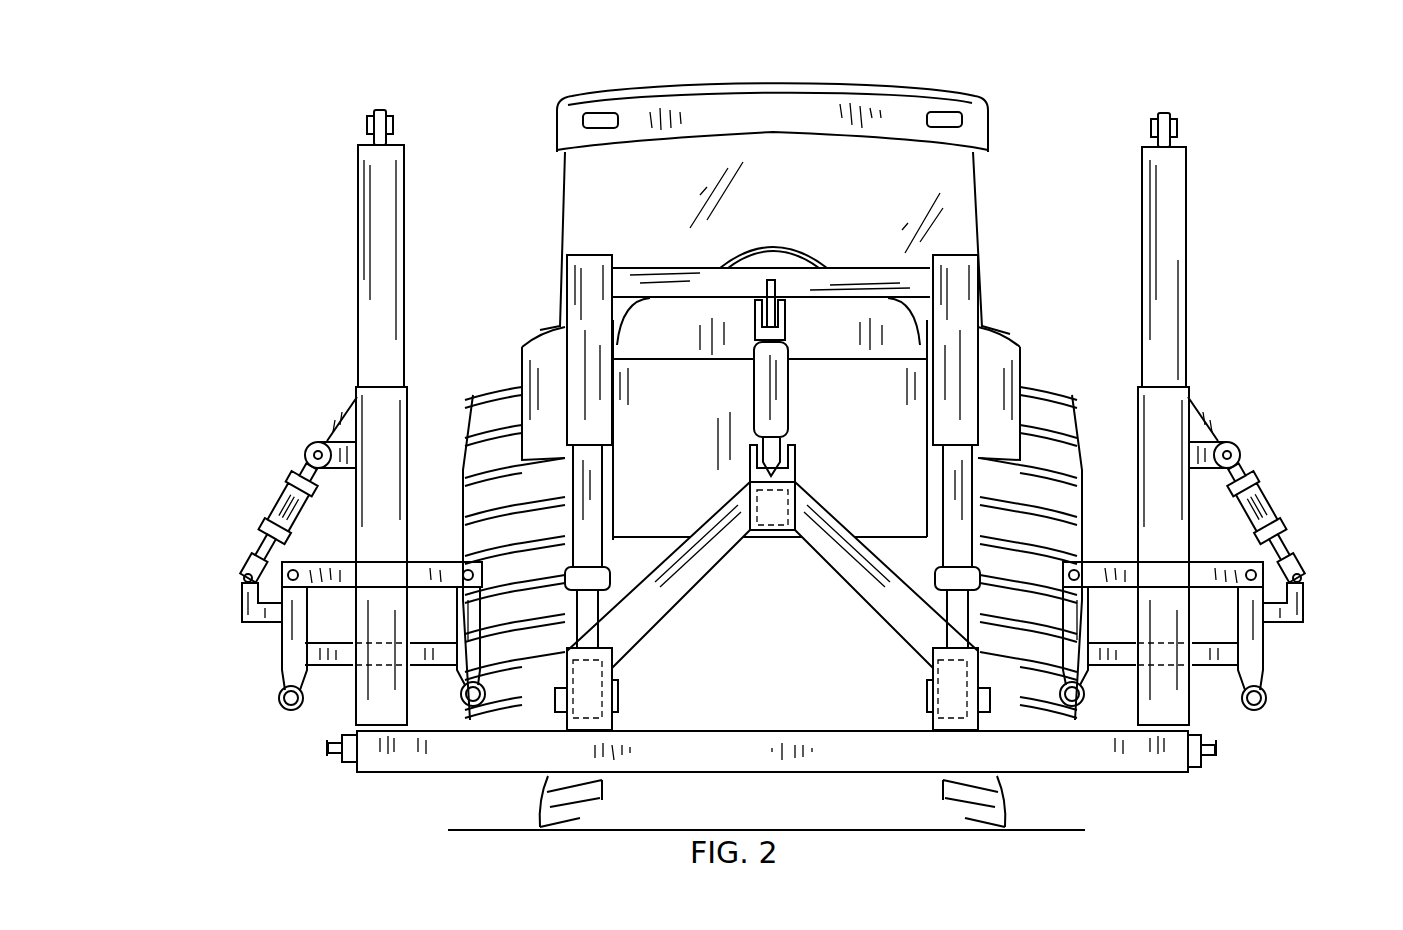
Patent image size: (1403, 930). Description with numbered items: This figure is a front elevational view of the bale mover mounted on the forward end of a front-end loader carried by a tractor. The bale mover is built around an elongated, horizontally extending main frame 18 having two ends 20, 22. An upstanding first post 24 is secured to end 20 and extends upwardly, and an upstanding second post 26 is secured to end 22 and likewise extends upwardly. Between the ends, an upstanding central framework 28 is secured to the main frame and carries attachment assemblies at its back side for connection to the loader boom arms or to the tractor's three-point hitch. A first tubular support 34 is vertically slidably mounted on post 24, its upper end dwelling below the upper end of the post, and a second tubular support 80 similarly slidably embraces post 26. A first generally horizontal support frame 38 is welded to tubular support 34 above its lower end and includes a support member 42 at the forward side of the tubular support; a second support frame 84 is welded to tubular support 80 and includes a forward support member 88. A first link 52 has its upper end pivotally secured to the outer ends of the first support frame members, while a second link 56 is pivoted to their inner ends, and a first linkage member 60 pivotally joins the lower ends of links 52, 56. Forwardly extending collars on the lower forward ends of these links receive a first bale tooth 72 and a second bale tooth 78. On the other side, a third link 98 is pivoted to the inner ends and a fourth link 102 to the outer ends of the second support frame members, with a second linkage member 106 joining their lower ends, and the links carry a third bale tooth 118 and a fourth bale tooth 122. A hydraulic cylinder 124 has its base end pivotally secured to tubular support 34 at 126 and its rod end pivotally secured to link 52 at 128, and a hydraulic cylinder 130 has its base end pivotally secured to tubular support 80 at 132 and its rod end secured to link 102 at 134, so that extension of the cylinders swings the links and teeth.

The main frame 18 is at (753, 747).
The end 20 is at (348, 770).
The end 22 is at (1210, 760).
The first post 24 is at (373, 283).
The second post 26 is at (1155, 225).
The central framework 28 is at (852, 603).
The first tubular support 34 is at (386, 398).
The first support frame 38 is at (428, 540).
The support member 42 is at (313, 572).
The first link 52 is at (276, 633).
The second link 56 is at (482, 617).
The first linkage member 60 is at (330, 660).
The first bale tooth 72 is at (285, 710).
The second bale tooth 78 is at (468, 704).
The second tubular support 80 is at (1157, 413).
The second support frame 84 is at (1115, 537).
The support member 88 is at (1233, 573).
The third link 98 is at (1050, 617).
The fourth link 102 is at (1260, 633).
The second linkage member 106 is at (1210, 665).
The third bale tooth 118 is at (1080, 705).
The fourth bale tooth 122 is at (1262, 708).
The hydraulic cylinder 124 is at (284, 513).
The pivot of cylinder base end 126 is at (313, 447).
The pivot of cylinder rod end 128 is at (238, 580).
The hydraulic cylinder 130 is at (1287, 508).
The pivot of cylinder base end 132 is at (1237, 450).
The pivot of cylinder rod end 134 is at (1303, 585).